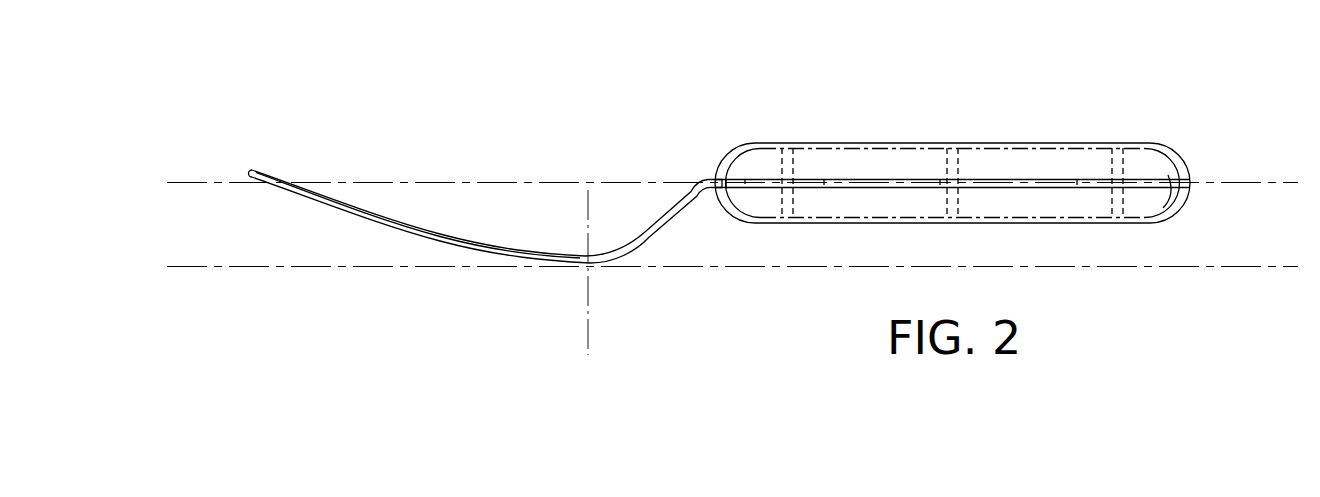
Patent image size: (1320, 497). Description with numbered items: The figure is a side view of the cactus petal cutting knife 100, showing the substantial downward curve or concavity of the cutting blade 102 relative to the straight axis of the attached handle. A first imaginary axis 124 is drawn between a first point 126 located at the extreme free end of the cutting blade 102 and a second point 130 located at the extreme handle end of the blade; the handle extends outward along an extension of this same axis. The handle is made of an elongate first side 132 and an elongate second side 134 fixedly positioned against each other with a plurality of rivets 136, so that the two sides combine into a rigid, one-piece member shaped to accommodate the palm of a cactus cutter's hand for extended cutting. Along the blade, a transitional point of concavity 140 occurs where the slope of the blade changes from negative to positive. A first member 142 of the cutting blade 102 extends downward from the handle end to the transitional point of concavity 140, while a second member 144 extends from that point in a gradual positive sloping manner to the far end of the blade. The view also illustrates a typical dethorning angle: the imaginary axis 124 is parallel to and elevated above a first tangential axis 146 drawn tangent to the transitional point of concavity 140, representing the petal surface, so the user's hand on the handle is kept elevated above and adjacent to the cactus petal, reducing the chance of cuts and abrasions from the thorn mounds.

The cactus petal cutting knife 100 is at (717, 62).
The cutting blade 102 is at (499, 214).
The first imaginary axis 124 is at (430, 181).
The first point 126 is at (293, 184).
The second point 130 is at (703, 177).
The first side 132 is at (952, 178).
The second side 134 is at (1042, 211).
The rivets 136 is at (1126, 158).
The transitional point of concavity 140 is at (594, 264).
The first member 142 is at (668, 228).
The second member 144 is at (418, 243).
The first tangential axis 146 is at (218, 268).